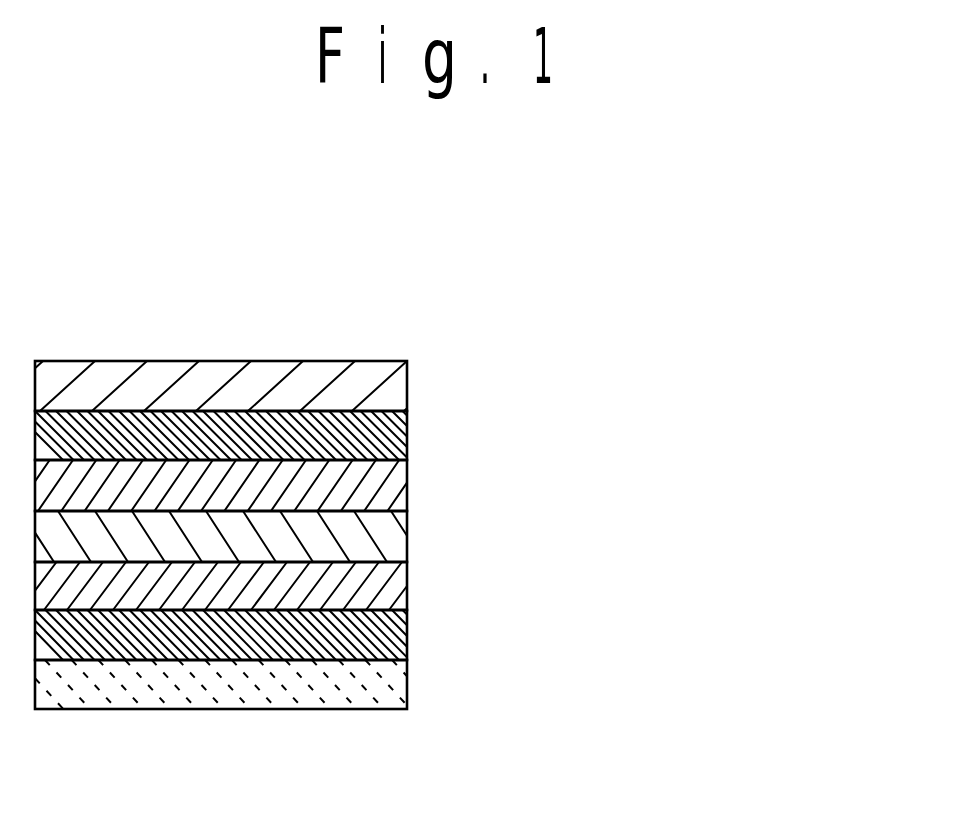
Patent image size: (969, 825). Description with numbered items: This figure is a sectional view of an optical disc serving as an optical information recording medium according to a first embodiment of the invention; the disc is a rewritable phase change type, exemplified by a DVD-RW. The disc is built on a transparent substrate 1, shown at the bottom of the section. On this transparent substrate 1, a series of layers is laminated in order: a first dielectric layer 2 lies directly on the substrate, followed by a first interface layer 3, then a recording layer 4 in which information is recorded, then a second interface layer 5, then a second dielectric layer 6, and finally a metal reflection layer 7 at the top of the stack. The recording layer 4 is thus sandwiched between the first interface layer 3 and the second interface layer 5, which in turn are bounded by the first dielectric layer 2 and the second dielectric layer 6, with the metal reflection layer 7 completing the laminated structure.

The transparent substrate 1 is at (395, 683).
The first dielectric layer 2 is at (395, 632).
The first interface layer 3 is at (393, 585).
The recording layer 4 is at (395, 535).
The second interface layer 5 is at (395, 483).
The second dielectric layer 6 is at (395, 433).
The metal reflection layer 7 is at (395, 385).